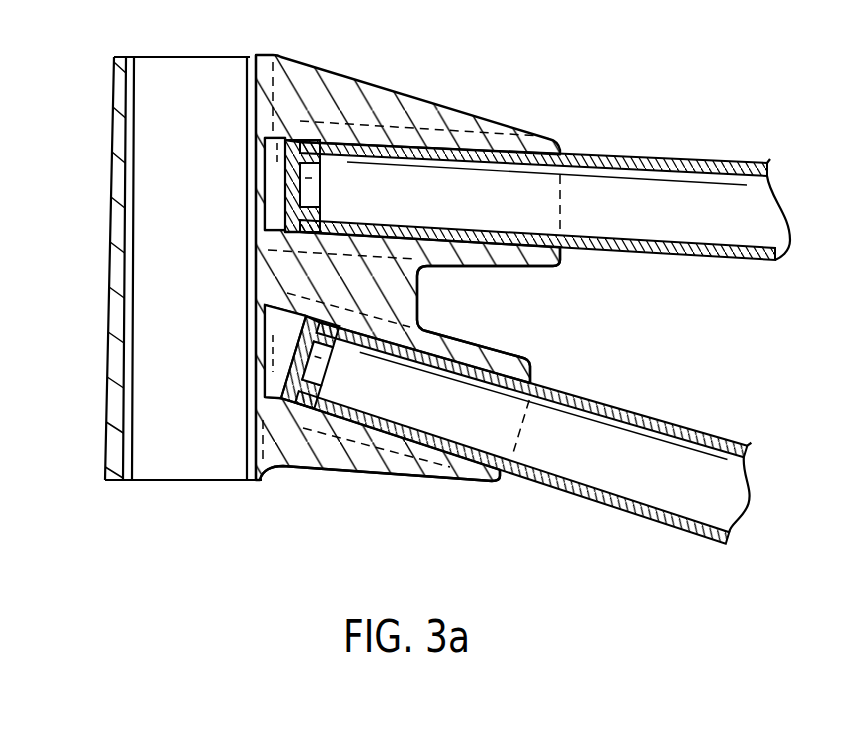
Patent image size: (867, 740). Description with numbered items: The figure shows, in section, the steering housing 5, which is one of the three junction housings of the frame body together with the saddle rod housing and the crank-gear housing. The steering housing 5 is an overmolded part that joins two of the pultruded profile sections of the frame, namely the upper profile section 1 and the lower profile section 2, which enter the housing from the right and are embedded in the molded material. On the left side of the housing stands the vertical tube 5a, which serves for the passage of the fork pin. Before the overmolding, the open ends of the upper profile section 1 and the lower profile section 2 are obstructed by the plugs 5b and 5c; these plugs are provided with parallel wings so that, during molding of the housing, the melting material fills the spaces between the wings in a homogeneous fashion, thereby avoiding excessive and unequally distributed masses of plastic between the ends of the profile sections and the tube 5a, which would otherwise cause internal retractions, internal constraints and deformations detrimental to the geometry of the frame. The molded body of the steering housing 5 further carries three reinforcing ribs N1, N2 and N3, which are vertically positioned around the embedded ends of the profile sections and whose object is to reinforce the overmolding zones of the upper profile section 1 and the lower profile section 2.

The upper profile section 1 is at (618, 190).
The lower profile section 2 is at (605, 447).
The steering housing 5 is at (118, 260).
The vertical tube 5a is at (240, 445).
The plug 5b is at (282, 142).
The plug 5c is at (263, 418).
The reinforcing rib N1 is at (392, 272).
The reinforcing rib N2 is at (420, 122).
The reinforcing rib N3 is at (352, 455).